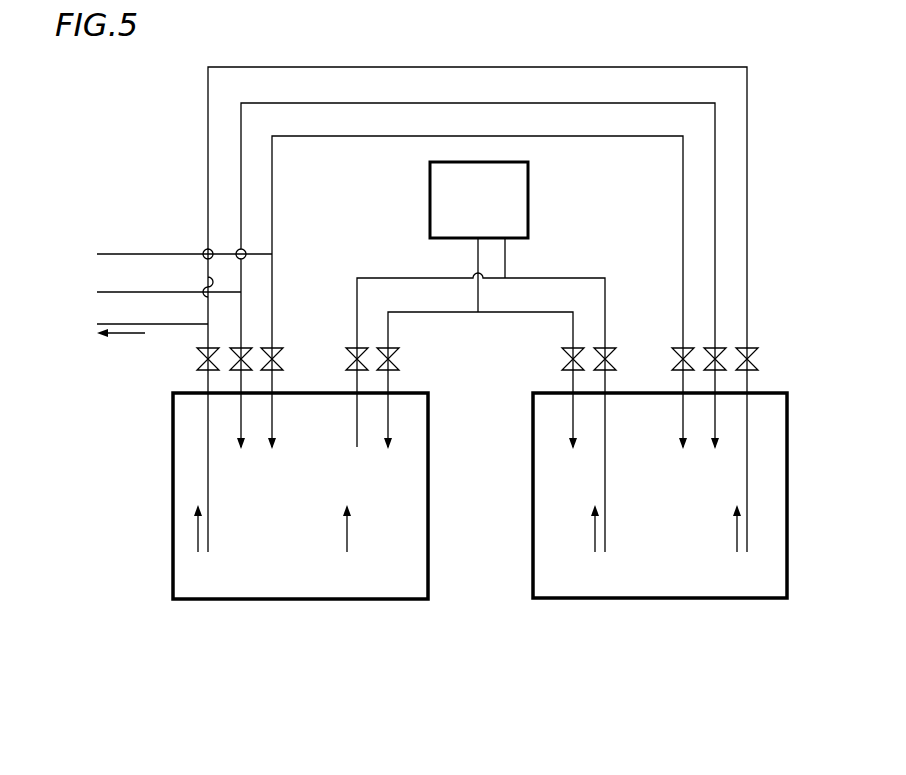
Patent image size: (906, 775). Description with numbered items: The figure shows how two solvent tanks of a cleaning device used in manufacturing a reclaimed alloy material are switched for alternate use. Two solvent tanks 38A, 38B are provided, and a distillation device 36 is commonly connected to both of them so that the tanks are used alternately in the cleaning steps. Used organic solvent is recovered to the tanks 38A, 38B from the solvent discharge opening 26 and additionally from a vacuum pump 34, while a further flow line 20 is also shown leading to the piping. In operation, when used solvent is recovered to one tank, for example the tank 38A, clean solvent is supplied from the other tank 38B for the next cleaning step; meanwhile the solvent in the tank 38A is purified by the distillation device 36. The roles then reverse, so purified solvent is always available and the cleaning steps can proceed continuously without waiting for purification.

The air flow line 20 is at (147, 350).
The solvent discharge opening 26 is at (80, 292).
The vacuum pump 34 is at (80, 254).
The distillation device 36 is at (528, 213).
The solvent tank 38A is at (268, 578).
The solvent tank 38B is at (652, 572).